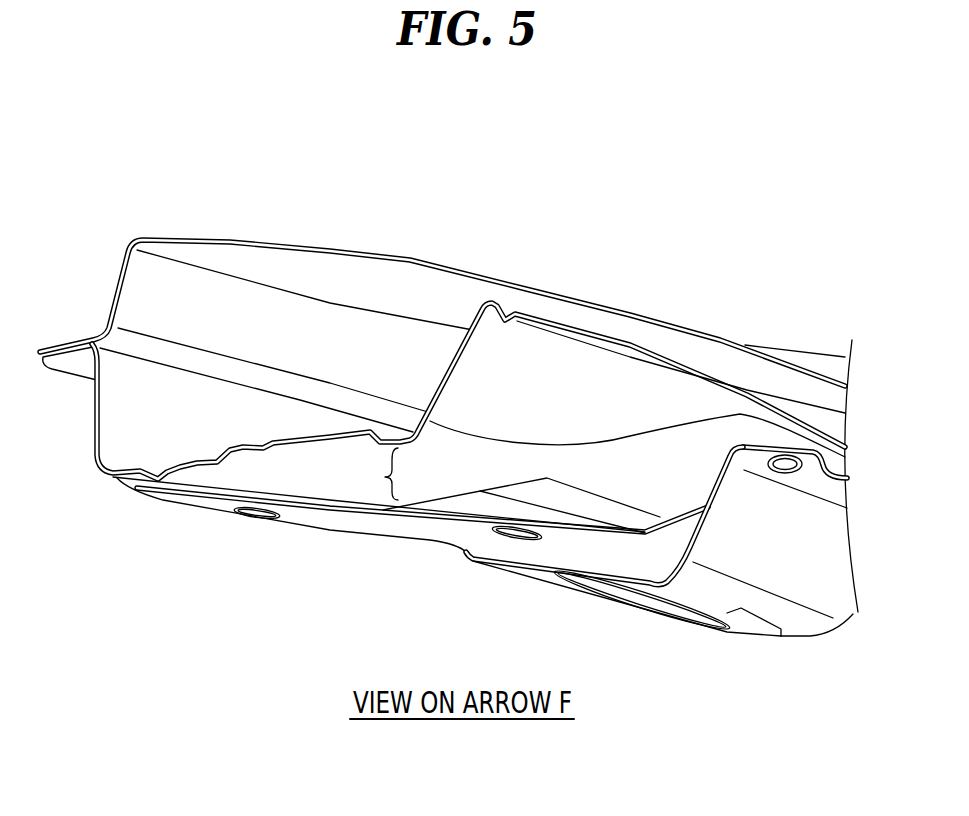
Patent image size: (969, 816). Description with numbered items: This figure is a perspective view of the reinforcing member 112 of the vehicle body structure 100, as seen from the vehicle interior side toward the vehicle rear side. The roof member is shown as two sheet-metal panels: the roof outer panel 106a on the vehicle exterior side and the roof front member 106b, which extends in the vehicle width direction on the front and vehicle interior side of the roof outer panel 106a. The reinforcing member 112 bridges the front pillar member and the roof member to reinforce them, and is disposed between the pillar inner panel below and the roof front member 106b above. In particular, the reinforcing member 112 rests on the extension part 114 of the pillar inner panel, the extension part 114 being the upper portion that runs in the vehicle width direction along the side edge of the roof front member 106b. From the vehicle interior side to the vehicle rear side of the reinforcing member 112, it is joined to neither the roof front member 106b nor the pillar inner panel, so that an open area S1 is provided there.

The vehicle body structure 100 is at (298, 172).
The roof outer panel 106a is at (363, 253).
The roof front member 106b is at (470, 318).
The open area S1 is at (385, 477).
The reinforcing member 112 is at (430, 531).
The extension part 114 is at (703, 585).